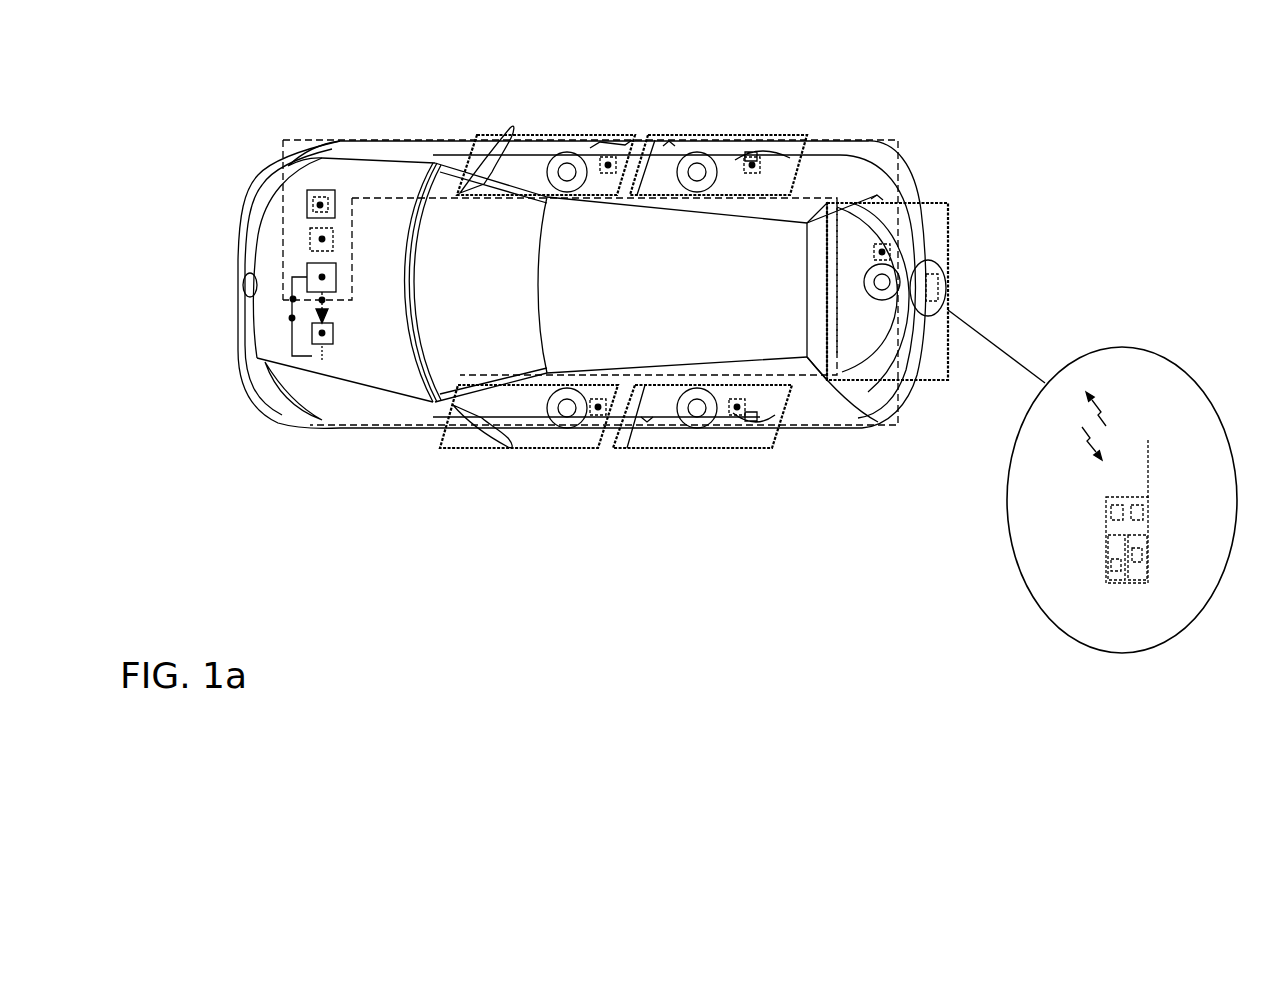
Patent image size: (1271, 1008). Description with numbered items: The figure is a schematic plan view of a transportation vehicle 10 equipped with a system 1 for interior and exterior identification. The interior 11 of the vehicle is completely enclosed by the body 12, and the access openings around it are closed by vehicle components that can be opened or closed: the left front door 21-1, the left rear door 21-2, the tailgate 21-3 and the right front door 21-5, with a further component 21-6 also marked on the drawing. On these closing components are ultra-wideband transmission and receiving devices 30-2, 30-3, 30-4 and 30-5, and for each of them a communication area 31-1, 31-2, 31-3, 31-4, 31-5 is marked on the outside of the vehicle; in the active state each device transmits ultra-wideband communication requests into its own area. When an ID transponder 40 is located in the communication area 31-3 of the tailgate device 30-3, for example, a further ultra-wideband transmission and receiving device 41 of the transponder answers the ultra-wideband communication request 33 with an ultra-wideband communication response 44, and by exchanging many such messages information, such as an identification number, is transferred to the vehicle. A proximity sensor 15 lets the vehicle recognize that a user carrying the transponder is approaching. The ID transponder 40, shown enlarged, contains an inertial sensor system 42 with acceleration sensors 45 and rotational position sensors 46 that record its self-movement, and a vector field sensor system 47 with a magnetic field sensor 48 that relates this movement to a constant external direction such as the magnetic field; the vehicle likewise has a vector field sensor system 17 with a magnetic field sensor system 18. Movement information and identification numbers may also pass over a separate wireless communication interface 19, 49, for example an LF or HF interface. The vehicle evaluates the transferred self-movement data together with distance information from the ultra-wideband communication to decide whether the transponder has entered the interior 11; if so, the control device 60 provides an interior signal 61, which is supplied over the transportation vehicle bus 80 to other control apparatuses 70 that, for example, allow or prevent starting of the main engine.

The system for interior and exterior identification 1 is at (303, 139).
The transportation vehicle 10 is at (288, 166).
The interior 11 is at (446, 230).
The body 12 is at (400, 423).
The proximity sensor 15 is at (608, 165).
The vector field sensor system 17 is at (307, 190).
The magnetic field sensor system 18 is at (313, 200).
The wireless communication interface 19 is at (322, 239).
The left front door 21-1 is at (519, 424).
The left rear door 21-2 is at (647, 422).
The tailgate 21-3 is at (877, 195).
The right front door 21-5 is at (496, 163).
The camera 21-6 is at (669, 141).
The ultra-wideband transmission and receiving device 30-2 is at (686, 418).
The ultra-wideband transmission and receiving device 30-3 is at (875, 293).
The ultra-wideband transmission and receiving device 30-4 is at (703, 164).
The ultra-wideband transmission and receiving device 30-5 is at (572, 164).
The communication area 31-1 is at (459, 447).
The communication area 31-2 is at (762, 447).
The communication area 31-3 is at (926, 203).
The communication area 31-4 is at (701, 134).
The communication area 31-5 is at (547, 141).
The ultra-wideband communication request 33 is at (1082, 427).
The ID transponder 40 is at (931, 287).
The further ultra-wideband transmission and receiving device 41 is at (1137, 512).
The inertial sensor system 42 is at (1120, 578).
The ultra-wideband communication response 44 is at (1106, 426).
The acceleration sensors 45 is at (1116, 545).
The rotational position sensors 46 is at (1116, 565).
The vector field sensor system 47 is at (1142, 538).
The magnetic field sensor 48 is at (1137, 555).
The wireless communication interface 49 is at (1116, 512).
The control device 60 is at (322, 277).
The interior signal 61 is at (293, 299).
The other control apparatuses 70 is at (312, 334).
The transportation vehicle bus 80 is at (292, 318).